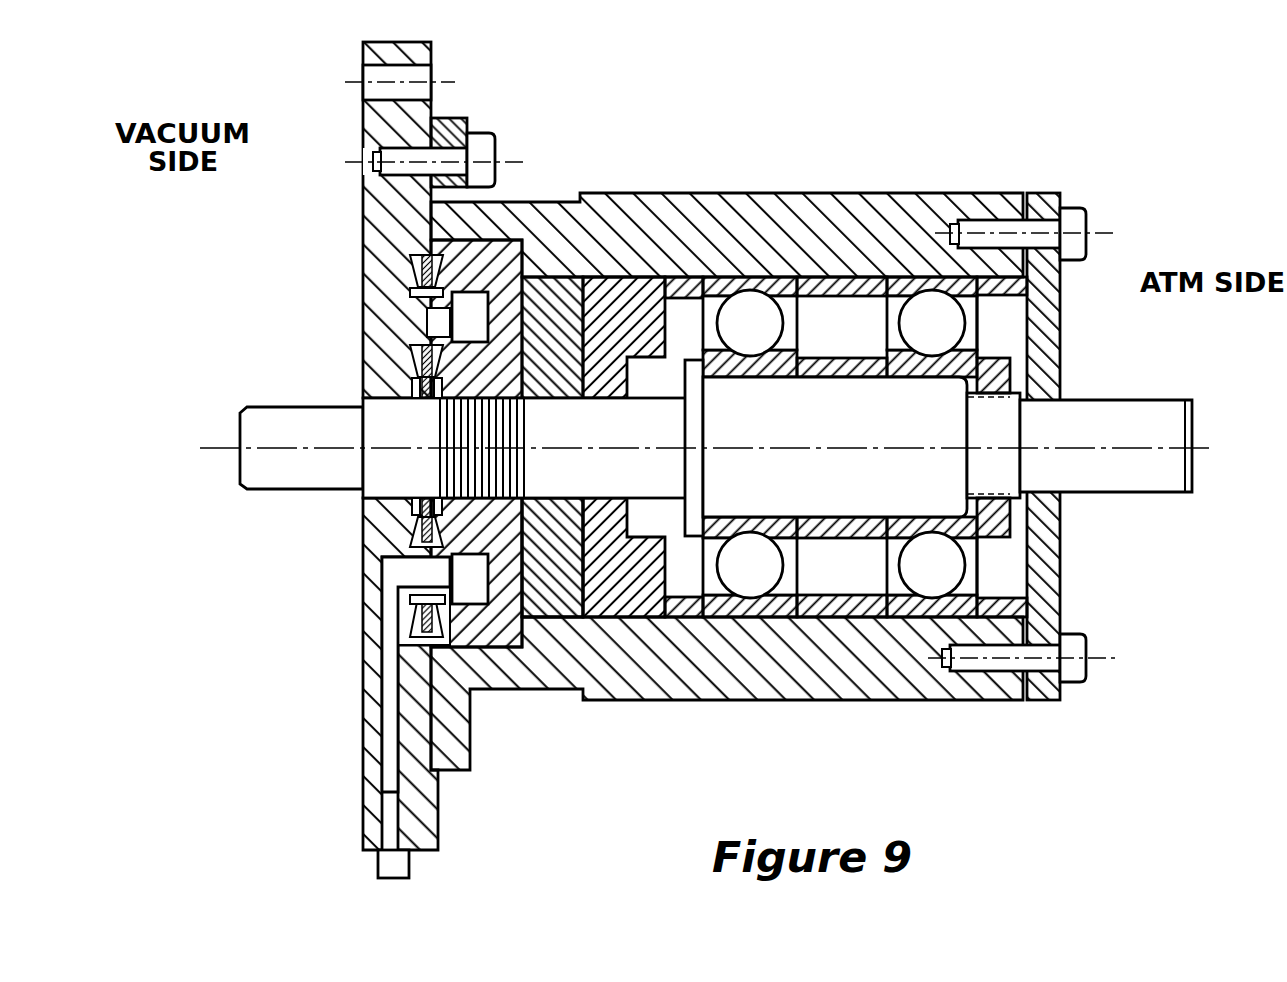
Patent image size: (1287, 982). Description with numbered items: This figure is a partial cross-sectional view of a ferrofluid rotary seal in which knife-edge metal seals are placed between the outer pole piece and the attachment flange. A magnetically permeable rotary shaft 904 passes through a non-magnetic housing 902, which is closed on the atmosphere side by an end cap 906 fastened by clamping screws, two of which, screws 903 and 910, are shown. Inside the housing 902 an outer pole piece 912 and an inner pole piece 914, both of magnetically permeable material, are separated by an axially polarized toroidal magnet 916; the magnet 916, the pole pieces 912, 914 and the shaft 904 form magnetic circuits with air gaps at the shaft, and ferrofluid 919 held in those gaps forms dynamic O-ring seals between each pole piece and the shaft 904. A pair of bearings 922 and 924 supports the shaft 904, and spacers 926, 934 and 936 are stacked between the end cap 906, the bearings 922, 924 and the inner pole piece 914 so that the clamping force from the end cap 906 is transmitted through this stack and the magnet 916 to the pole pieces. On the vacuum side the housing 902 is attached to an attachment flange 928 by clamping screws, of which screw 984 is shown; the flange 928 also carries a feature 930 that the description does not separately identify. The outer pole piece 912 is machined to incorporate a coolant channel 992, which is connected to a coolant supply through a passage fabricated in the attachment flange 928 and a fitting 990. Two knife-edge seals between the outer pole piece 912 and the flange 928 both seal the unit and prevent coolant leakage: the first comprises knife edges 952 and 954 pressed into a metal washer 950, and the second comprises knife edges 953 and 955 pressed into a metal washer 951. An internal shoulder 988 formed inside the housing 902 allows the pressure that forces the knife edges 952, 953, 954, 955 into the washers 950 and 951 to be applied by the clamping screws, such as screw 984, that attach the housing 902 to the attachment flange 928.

The housing 902 is at (755, 680).
The clamping screw 903 is at (1073, 215).
The rotary shaft 904 is at (716, 440).
The end cap 906 is at (1048, 542).
The clamping screw 910 is at (1073, 643).
The outer pole piece 912 is at (411, 462).
The inner pole piece 914 is at (642, 288).
The magnet 916 is at (598, 672).
The ferrofluid 919 is at (502, 438).
The bearing 922 is at (775, 288).
The bearing 924 is at (913, 286).
The spacer 926 is at (688, 600).
The attachment flange 928 is at (397, 461).
The mounting slot 930 is at (373, 92).
The spacer 934 is at (848, 605).
The spacer 936 is at (1000, 605).
The metal washer 950 is at (415, 272).
The metal washer 951 is at (415, 358).
The knife edge 952 is at (417, 523).
The knife edge 953 is at (417, 619).
The knife edge 954 is at (455, 552).
The knife edge 955 is at (443, 620).
The clamping screw 984 is at (482, 147).
The internal shoulder 988 is at (560, 597).
The fitting 990 is at (393, 867).
The coolant channel 992 is at (457, 571).